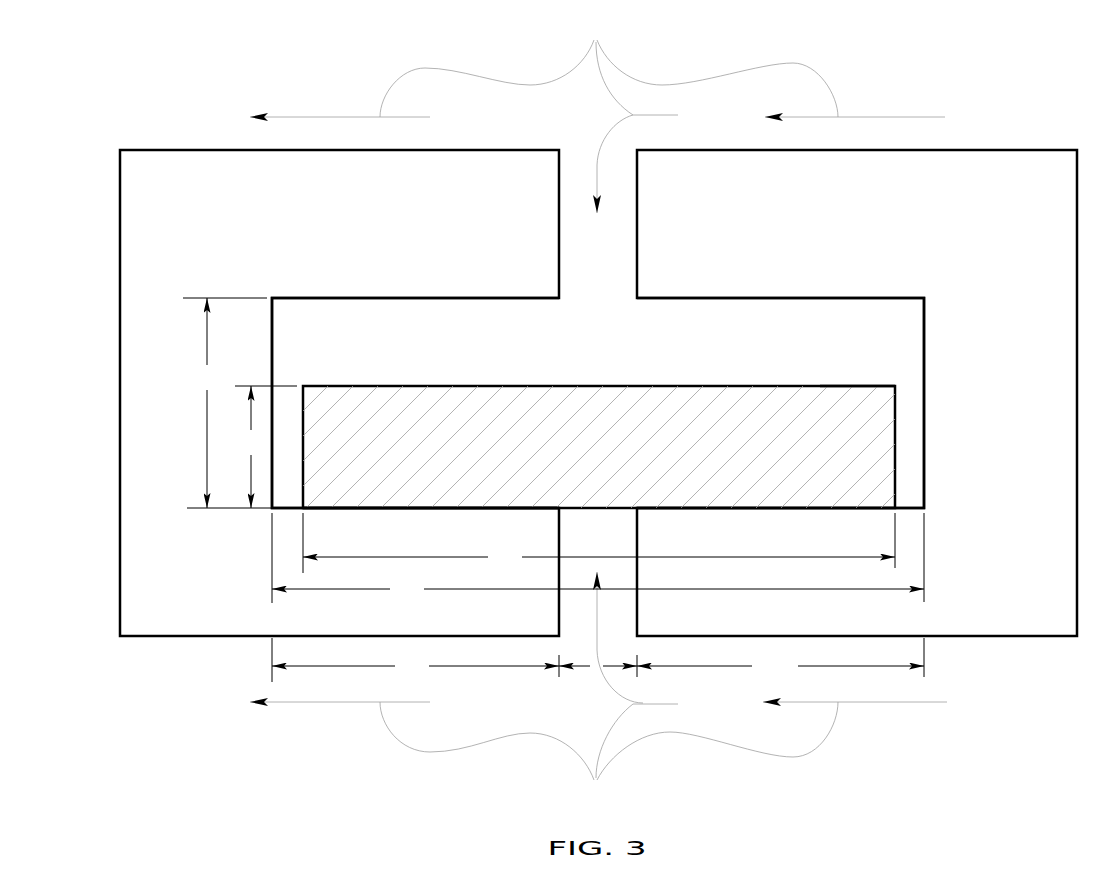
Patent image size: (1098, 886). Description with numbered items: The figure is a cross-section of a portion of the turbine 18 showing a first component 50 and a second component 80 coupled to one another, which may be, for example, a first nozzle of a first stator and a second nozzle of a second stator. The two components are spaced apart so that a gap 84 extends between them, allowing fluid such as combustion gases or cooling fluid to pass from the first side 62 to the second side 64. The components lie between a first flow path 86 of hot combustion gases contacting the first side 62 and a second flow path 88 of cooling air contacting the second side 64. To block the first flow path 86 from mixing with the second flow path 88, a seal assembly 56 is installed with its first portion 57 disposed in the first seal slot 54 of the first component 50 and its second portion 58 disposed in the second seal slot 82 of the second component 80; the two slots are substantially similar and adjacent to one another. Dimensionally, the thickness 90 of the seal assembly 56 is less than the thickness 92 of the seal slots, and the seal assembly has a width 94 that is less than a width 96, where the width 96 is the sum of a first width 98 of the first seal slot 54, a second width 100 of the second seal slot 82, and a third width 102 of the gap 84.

The turbine 18 is at (128, 77).
The first component 50 is at (178, 175).
The first seal slot 54 is at (352, 332).
The seal assembly 56 is at (862, 386).
The first portion of the seal assembly 57 is at (392, 485).
The second portion of the seal assembly 58 is at (728, 408).
The first side 62 is at (328, 48).
The second side 64 is at (400, 793).
The second component 80 is at (1030, 170).
The second seal slot 82 is at (713, 345).
The gap 84 is at (610, 248).
The first flow path 86 is at (597, 63).
The second flow path 88 is at (598, 691).
The thickness of the seal assembly 90 is at (266, 447).
The thickness of the seal slot 92 is at (240, 403).
The width of the seal assembly 94 is at (599, 543).
The combined width 96 is at (598, 558).
The first width 98 is at (415, 660).
The second width 100 is at (780, 658).
The third width 102 is at (590, 667).